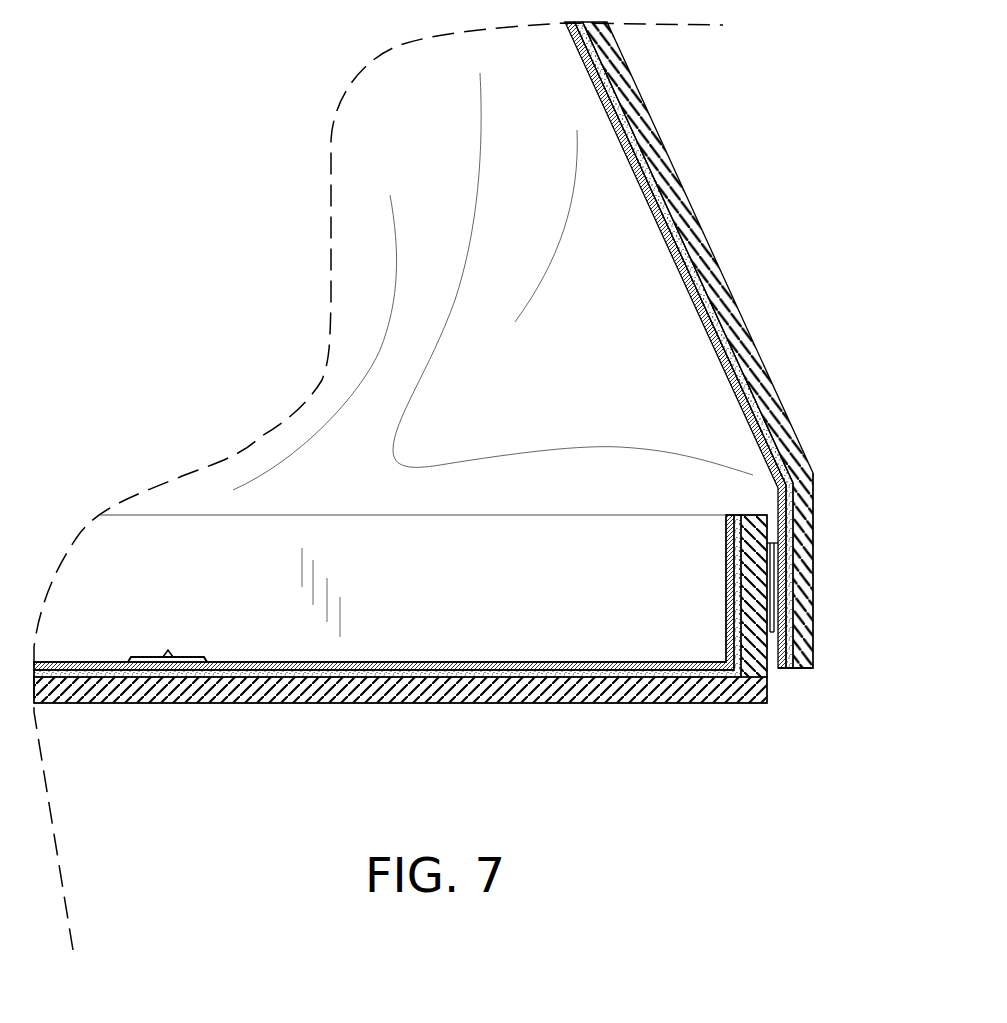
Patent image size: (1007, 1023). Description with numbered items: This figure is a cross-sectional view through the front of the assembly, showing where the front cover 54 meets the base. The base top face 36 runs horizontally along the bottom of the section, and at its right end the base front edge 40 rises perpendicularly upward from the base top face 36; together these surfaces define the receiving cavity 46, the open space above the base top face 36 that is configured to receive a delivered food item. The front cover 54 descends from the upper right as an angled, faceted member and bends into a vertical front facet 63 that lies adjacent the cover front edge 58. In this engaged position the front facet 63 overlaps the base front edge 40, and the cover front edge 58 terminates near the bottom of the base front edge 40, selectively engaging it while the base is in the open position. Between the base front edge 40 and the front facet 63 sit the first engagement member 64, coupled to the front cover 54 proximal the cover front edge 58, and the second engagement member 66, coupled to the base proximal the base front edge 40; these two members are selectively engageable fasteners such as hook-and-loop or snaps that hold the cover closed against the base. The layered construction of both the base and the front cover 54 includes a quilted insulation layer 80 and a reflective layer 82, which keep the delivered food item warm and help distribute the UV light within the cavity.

The base top face 36 is at (168, 652).
The base front edge 40 is at (755, 645).
The receiving cavity 46 is at (587, 620).
The front cover 54 is at (737, 313).
The cover front edge 58 is at (812, 668).
The front facet 63 is at (813, 602).
The first engagement member 64 is at (773, 565).
The second engagement member 66 is at (775, 590).
The quilted insulation layer 80 is at (440, 672).
The reflective layer 82 is at (352, 672).